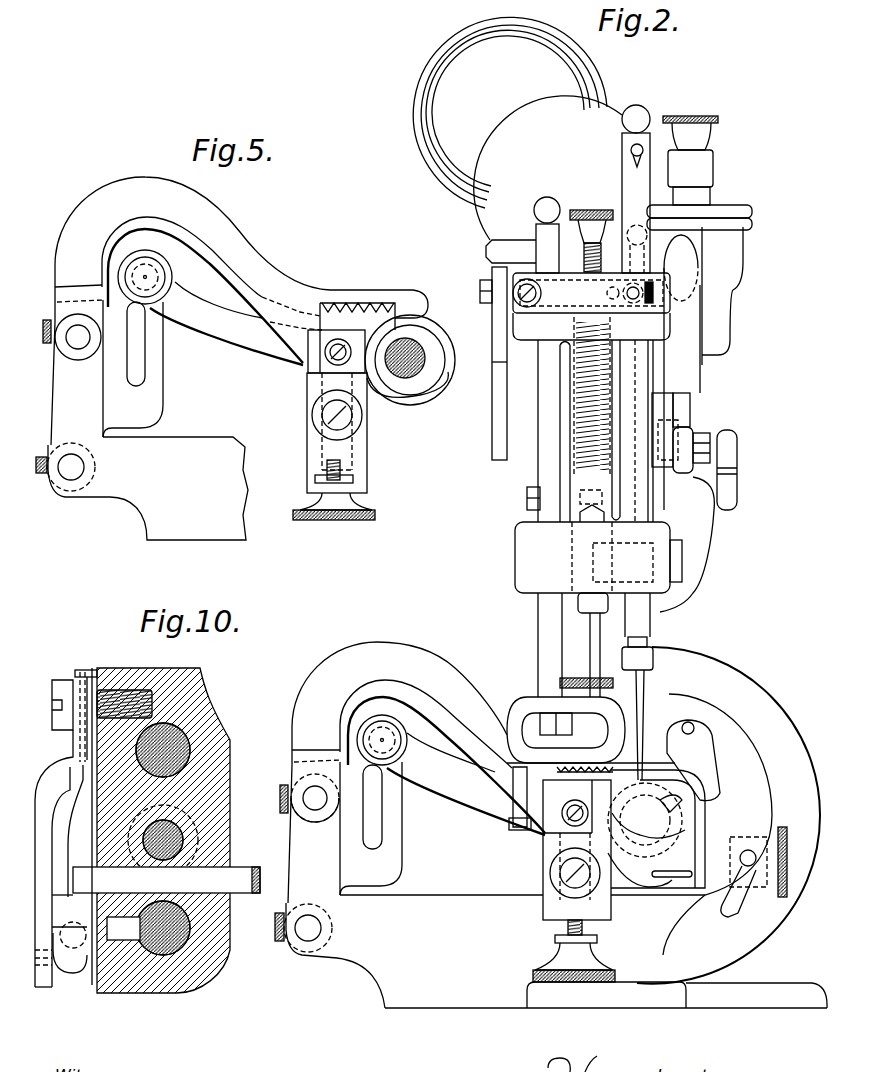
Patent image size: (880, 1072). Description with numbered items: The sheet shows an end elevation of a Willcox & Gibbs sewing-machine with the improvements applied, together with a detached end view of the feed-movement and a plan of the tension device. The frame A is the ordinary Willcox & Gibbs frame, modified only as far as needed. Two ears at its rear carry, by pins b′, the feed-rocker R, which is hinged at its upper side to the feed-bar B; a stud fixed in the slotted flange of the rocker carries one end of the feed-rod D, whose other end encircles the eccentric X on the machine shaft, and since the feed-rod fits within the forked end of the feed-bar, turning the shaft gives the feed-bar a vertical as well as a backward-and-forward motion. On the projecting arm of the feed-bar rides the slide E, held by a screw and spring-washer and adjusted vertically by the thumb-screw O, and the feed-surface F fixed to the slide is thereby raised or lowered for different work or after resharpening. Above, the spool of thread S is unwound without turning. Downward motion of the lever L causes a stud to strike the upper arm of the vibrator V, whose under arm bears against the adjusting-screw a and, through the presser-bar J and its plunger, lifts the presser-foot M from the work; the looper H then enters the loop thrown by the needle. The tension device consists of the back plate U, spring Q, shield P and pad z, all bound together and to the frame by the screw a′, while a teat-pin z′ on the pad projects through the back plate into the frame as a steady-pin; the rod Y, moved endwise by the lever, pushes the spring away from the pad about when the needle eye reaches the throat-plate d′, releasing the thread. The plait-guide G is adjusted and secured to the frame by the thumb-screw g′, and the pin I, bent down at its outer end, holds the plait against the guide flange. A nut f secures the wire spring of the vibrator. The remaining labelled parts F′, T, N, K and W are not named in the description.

In FIG. 5, the frame A is at (148, 488).
In FIG. 2, the frame A is at (556, 951).
In FIG. 5, the feed-bar B is at (241, 253).
In FIG. 2, the feed-bar B is at (402, 705).
In FIG. 5, the feed-rod D is at (205, 297).
In FIG. 2, the feed-rod D is at (446, 766).
In FIG. 5, the feed-rocker R is at (107, 372).
In FIG. 2, the feed-rocker R is at (345, 831).
In FIG. 5, the pins b′ is at (65, 467).
In FIG. 5, the feed-surface F is at (357, 338).
In FIG. 2, the feed dog teeth F′ is at (591, 776).
In FIG. 5, the slide E is at (336, 411).
In FIG. 2, the slide E is at (577, 861).
In FIG. 5, the thumb-screw O is at (334, 504).
In FIG. 2, the thumb-screw O is at (574, 962).
In FIG. 5, the eccentric X is at (410, 360).
In FIG. 2, the spool of thread S is at (517, 128).
In FIG. 2, the thumb screw T is at (690, 160).
In FIG. 2, the shield P is at (591, 293).
In FIG. 10, the shield P is at (54, 858).
In FIG. 2, the lever L is at (697, 419).
In FIG. 2, the vibrator V is at (672, 552).
In FIG. 2, the presser-bar J is at (573, 645).
In FIG. 10, the presser-bar J is at (163, 750).
In FIG. 2, the adjusting-screw a is at (593, 602).
In FIG. 2, the rod Y is at (603, 655).
In FIG. 10, the rod Y is at (156, 881).
In FIG. 2, the needle bar rod N is at (637, 686).
In FIG. 10, the needle bar rod N is at (163, 928).
In FIG. 2, the presser-foot M is at (566, 730).
In FIG. 2, the hook arm K is at (693, 760).
In FIG. 2, the shield W is at (728, 815).
In FIG. 2, the plait-guide G is at (678, 846).
In FIG. 2, the looper H is at (656, 829).
In FIG. 2, the nut f is at (750, 850).
In FIG. 2, the thumb-screw g′ is at (791, 862).
In FIG. 2, the pin I is at (744, 877).
In FIG. 2, the throat-plate d′ is at (520, 797).
In FIG. 10, the screw a′ is at (102, 700).
In FIG. 10, the spring Q is at (71, 831).
In FIG. 10, the back plate U is at (85, 826).
In FIG. 10, the pad z is at (69, 944).
In FIG. 10, the teat-pin z′ is at (118, 928).